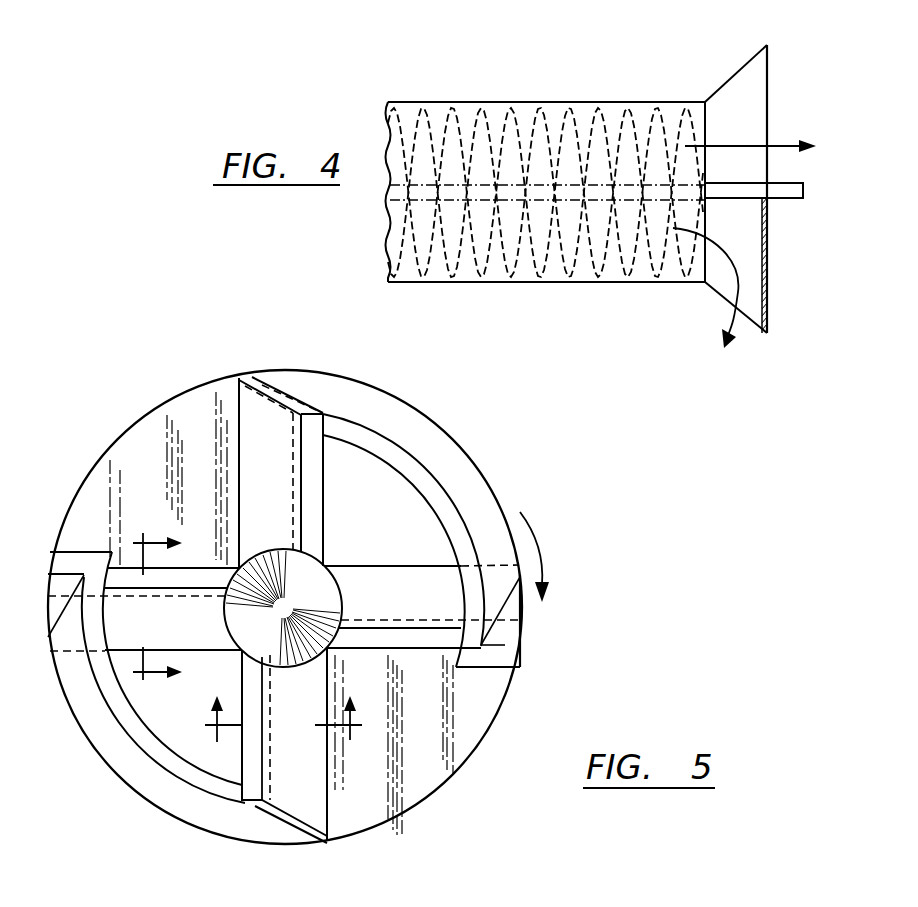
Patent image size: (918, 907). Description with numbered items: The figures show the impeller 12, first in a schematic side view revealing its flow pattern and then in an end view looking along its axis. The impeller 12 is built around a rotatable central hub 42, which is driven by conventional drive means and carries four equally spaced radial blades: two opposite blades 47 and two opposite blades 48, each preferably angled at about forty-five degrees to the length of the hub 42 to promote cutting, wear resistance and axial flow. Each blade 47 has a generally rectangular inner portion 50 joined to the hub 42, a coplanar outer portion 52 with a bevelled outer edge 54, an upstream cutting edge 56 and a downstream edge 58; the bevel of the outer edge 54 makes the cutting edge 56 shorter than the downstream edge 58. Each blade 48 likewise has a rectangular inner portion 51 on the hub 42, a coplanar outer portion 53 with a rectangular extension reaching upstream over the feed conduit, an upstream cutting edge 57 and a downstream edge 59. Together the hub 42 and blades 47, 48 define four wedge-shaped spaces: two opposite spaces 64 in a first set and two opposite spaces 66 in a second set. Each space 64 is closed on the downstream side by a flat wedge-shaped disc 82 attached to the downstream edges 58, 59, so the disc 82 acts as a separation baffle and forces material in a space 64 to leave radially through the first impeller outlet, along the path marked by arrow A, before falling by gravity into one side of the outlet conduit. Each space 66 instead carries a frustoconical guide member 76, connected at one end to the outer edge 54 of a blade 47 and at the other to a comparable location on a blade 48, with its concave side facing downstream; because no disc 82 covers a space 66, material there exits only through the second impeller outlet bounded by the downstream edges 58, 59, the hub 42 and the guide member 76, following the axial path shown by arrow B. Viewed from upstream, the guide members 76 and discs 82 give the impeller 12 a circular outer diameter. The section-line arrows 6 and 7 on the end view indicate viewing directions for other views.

In FIG. 4, the impeller 12 is at (753, 50).
In FIG. 4, the frustoconical guide member 76 is at (727, 97).
In FIG. 5, the frustoconical guide member 76 is at (498, 636).
In FIG. 4, the rotatable central hub 42 is at (792, 200).
In FIG. 5, the rotatable central hub 42 is at (303, 572).
In FIG. 4, the arrow A is at (740, 276).
In FIG. 4, the arrow B is at (782, 143).
In FIG. 5, the generally wedge-shaped space 64 is at (145, 455).
In FIG. 5, the generally wedge-shaped space 66 is at (387, 518).
In FIG. 5, the radially extending blade 47 is at (281, 488).
In FIG. 5, the radially extending blade 48 is at (195, 633).
In FIG. 5, the upstream cutting edge 56 is at (327, 478).
In FIG. 5, the downstream edge 58 is at (236, 394).
In FIG. 5, the inner portion 51 is at (348, 585).
In FIG. 5, the downstream edge 59 is at (447, 562).
In FIG. 5, the outer portion 53 is at (450, 602).
In FIG. 5, the inner portion 50 is at (295, 675).
In FIG. 5, the upstream cutting edge 57 is at (402, 653).
In FIG. 5, the bevelled outer edge 54 is at (290, 815).
In FIG. 5, the outer portion 52 is at (313, 808).
In FIG. 5, the wedge-shaped disc 82 is at (437, 768).
In FIG. 5, the section line 6 is at (286, 722).
In FIG. 5, the section line 7 is at (167, 606).